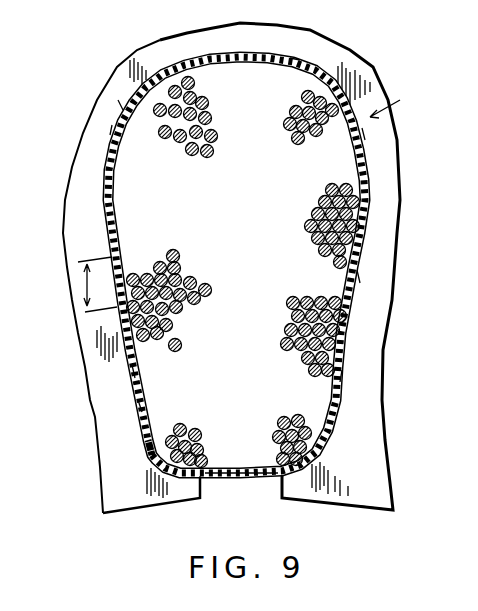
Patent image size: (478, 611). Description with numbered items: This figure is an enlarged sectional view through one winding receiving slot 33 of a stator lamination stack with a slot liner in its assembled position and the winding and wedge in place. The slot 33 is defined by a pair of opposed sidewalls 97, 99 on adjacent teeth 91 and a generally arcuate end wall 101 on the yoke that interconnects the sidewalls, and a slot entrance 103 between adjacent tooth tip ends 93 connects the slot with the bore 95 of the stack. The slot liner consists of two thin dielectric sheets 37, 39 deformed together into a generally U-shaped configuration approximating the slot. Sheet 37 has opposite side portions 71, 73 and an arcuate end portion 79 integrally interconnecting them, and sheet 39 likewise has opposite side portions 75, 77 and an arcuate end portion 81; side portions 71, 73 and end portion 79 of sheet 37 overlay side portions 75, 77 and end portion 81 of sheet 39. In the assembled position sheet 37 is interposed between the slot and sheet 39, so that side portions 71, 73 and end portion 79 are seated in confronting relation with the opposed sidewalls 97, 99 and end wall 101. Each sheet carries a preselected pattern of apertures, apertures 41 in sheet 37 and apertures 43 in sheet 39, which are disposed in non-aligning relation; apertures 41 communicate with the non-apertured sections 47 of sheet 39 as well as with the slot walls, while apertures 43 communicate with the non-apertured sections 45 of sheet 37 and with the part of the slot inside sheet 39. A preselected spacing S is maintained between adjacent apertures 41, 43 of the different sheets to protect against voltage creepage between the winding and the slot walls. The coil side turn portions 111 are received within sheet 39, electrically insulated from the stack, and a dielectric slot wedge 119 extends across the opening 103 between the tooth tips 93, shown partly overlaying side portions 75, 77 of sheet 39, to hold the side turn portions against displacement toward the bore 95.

The winding receiving slot 33 is at (433, 110).
The sheet 37 is at (122, 118).
The sheet 39 is at (123, 107).
The apertures 41 is at (364, 236).
The apertures 43 is at (350, 322).
The non-apertured sections 45 is at (115, 130).
The non-apertured sections 47 is at (366, 134).
The side portion 71 is at (147, 433).
The side portion 73 is at (362, 276).
The side portion 75 is at (133, 370).
The side portion 77 is at (332, 425).
The end portion 79 is at (193, 62).
The end portion 81 is at (310, 73).
The teeth 91 is at (97, 343).
The tip end 93 is at (293, 500).
The bore 95 is at (362, 510).
The sidewall 97 is at (140, 405).
The sidewall 99 is at (347, 377).
The end wall 101 is at (295, 62).
The slot entrance 103 is at (283, 483).
The side turn portion 111 is at (290, 196).
The slot wedge 119 is at (227, 478).
The preselected spacing S is at (85, 288).